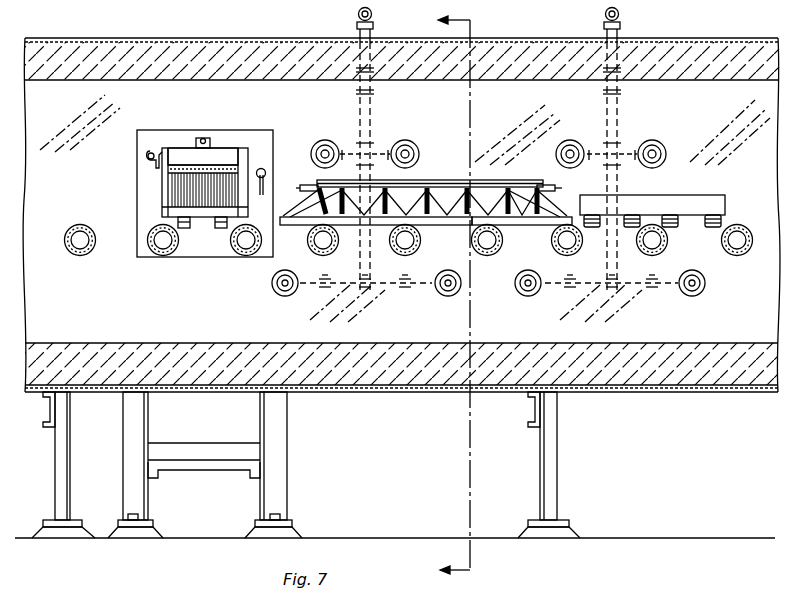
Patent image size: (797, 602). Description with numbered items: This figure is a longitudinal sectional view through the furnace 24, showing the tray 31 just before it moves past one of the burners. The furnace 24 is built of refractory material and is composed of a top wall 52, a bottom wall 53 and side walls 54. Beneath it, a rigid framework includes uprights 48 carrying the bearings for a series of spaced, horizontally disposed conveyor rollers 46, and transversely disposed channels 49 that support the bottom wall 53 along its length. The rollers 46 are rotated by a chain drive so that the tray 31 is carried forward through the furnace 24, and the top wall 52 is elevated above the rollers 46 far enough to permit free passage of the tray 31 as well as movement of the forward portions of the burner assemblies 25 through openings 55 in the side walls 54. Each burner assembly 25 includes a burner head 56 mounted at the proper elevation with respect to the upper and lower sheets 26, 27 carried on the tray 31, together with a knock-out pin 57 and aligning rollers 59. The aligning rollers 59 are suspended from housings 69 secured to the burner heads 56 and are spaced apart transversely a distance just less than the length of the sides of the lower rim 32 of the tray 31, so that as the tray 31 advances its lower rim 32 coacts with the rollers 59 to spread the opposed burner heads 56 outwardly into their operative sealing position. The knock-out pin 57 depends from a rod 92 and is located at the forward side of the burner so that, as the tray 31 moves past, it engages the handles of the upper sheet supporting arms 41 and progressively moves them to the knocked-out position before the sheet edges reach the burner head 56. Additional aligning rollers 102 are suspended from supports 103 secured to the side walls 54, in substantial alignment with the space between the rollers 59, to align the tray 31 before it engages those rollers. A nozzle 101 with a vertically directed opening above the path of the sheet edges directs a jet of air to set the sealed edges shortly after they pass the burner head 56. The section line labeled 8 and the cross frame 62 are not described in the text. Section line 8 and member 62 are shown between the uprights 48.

The furnace 24 is at (124, 60).
The top wall 52 is at (210, 62).
The bottom wall 53 is at (347, 368).
The side walls 54 is at (270, 100).
The section line 8- 8 is at (424, 29).
The burner assembly 25 is at (183, 150).
The opening 55 is at (188, 130).
The burner head 56 is at (218, 160).
The housing 69 is at (190, 190).
The nozzle 101 is at (152, 166).
The knock-out pin 57 is at (266, 180).
The rod 92 is at (264, 170).
The aligning rollers 59 is at (221, 232).
The rollers 46 is at (148, 248).
The upper sheet 26 is at (377, 180).
The upper sheet supporting arms 41 is at (314, 186).
The lower sheet 27 is at (437, 190).
The tray 31 is at (422, 222).
The lower rim 32 is at (510, 222).
The additional aligning rollers 102 is at (710, 214).
The supports 103 is at (716, 208).
The channels 49 is at (50, 402).
The uprights 48 is at (62, 476).
The cross frame 62 is at (272, 418).